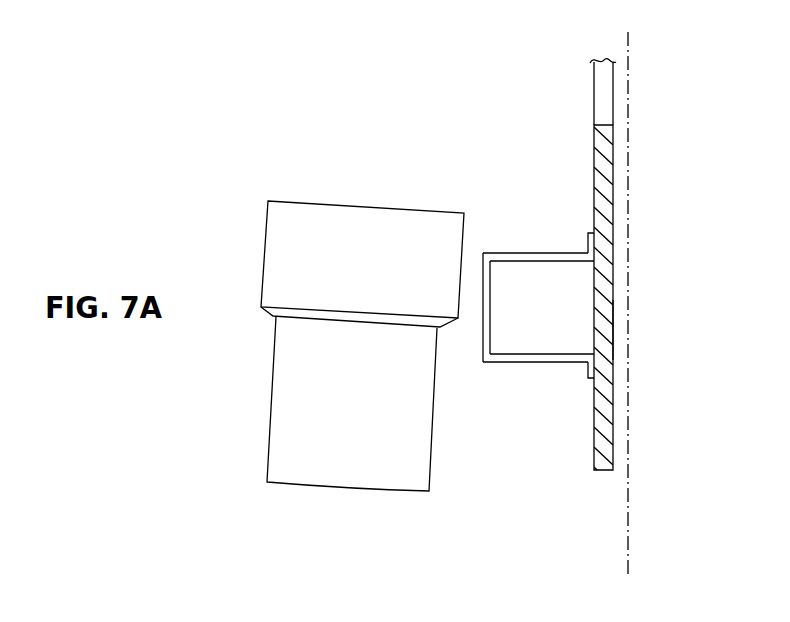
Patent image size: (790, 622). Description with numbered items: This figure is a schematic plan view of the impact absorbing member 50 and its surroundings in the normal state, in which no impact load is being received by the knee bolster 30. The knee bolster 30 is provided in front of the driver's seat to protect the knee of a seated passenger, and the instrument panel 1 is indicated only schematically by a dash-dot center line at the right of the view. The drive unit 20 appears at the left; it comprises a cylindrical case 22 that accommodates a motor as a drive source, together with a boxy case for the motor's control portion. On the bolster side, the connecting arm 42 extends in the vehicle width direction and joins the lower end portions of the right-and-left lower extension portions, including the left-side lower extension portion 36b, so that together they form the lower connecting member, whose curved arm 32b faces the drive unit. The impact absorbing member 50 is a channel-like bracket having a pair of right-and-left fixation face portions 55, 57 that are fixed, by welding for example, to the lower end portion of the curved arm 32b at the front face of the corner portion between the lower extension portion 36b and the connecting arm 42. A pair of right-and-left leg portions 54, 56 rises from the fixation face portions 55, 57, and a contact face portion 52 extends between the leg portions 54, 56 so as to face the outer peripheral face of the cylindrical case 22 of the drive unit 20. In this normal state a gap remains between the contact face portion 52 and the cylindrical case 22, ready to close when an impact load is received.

The instrument panel 1 is at (628, 187).
The drive unit 20 is at (242, 250).
The cylindrical case 22 is at (272, 380).
The knee bolster 30 is at (575, 83).
The curved arm 32b is at (615, 329).
The left-side lower extension portion 36b is at (602, 290).
The connecting arm 42 is at (605, 88).
The impact absorbing member 50 is at (503, 238).
The contact face portion 52 is at (482, 335).
The leg portion 54 is at (530, 253).
The fixation face portion 55 is at (587, 238).
The leg portion 56 is at (528, 362).
The fixation face portion 57 is at (588, 378).